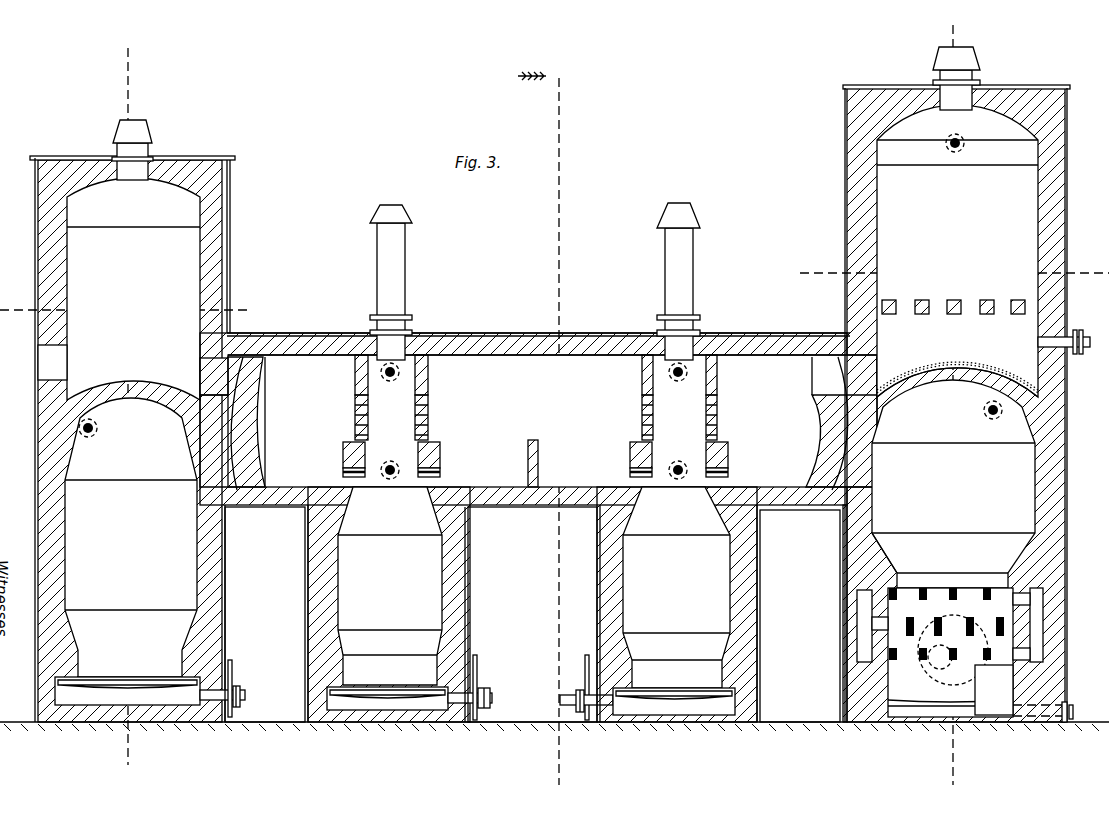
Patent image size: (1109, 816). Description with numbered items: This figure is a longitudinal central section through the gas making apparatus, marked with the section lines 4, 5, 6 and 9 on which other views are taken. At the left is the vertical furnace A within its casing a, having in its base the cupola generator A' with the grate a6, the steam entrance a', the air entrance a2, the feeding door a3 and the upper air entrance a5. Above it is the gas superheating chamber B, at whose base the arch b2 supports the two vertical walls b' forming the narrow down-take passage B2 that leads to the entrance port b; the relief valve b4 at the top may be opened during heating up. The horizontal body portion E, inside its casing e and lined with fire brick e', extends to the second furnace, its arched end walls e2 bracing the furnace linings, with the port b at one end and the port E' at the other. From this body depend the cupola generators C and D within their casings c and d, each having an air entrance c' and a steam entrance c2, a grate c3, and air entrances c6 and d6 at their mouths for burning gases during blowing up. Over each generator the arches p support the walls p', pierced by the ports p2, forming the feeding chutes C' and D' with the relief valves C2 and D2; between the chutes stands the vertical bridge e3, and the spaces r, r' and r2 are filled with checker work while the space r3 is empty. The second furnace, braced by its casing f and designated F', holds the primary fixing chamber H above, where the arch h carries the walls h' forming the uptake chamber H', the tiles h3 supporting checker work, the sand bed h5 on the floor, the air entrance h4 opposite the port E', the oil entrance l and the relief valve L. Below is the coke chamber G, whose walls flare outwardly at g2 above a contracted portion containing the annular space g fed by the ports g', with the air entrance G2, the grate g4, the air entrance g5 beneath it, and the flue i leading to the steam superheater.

The vertical furnace A is at (121, 439).
The cupola generator A' is at (131, 537).
The casing a is at (133, 440).
The steam entrance a' is at (434, 687).
The air entrance a2 is at (200, 694).
The feeding door a3 is at (674, 701).
The air entrance a5 is at (92, 436).
The grate a6 is at (127, 691).
The gas superheating chamber B is at (133, 289).
The down-take passage B2 is at (84, 330).
The entrance port b is at (215, 376).
The vertical walls b' is at (155, 330).
The arch b2 is at (106, 388).
The outlet or relief valve b4 is at (115, 134).
The cupola generator C is at (266, 613).
The feeding chute C' is at (389, 542).
The relief valve C2 is at (372, 215).
The casing c is at (390, 614).
The air entrance c' is at (457, 702).
The steam entrance c2 is at (484, 680).
The grate c3 is at (387, 699).
The air entrance c6 is at (385, 468).
The cupola generator D is at (654, 613).
The feeding chute D' is at (677, 542).
The relief valve D2 is at (693, 216).
The casing d is at (597, 619).
The air entrance d6 is at (673, 467).
The horizontal body portion E is at (538, 408).
The port E' is at (844, 376).
The casing e is at (538, 423).
The fire brick lining e' is at (552, 420).
The arched end walls e2 is at (265, 453).
The vertical bridge e3 is at (528, 447).
The coking tower F' is at (964, 403).
The casing f is at (847, 227).
The coke chamber G is at (953, 484).
The air entrance G2 is at (990, 417).
The annular space g is at (952, 652).
The ports g' is at (951, 631).
The outwardly flaring walls g2 is at (893, 560).
The grate g4 is at (994, 690).
The air entrance g5 is at (1074, 710).
The primary fixing chamber H is at (957, 251).
The uptake chamber H' is at (923, 333).
The arch h is at (957, 366).
The walls h' is at (1013, 233).
The tiles h3 is at (892, 296).
The air entrance h4 is at (1046, 342).
The sand bed h5 is at (905, 380).
The flue i is at (953, 650).
The relief valve L is at (932, 62).
The oil entrance l is at (945, 146).
The arches p is at (526, 459).
The walls p' is at (537, 395).
The ports p2 is at (368, 423).
The space r is at (304, 422).
The space r' is at (495, 410).
The space r2 is at (591, 435).
The space r3 is at (776, 435).
The section line 4- 4 is at (128, 415).
The section line 5- 5 is at (954, 406).
The section line 6- 6 is at (559, 430).
The section line 9- 9 is at (554, 291).